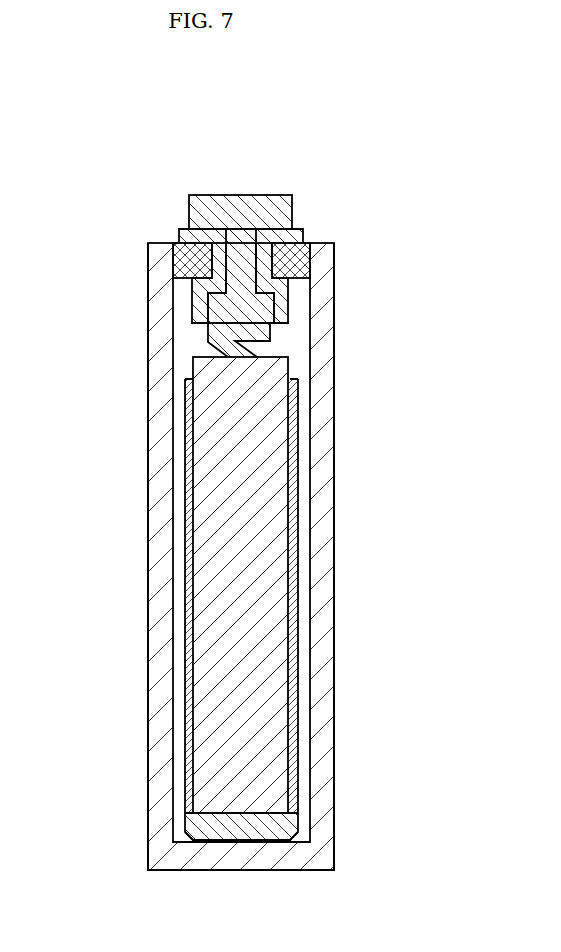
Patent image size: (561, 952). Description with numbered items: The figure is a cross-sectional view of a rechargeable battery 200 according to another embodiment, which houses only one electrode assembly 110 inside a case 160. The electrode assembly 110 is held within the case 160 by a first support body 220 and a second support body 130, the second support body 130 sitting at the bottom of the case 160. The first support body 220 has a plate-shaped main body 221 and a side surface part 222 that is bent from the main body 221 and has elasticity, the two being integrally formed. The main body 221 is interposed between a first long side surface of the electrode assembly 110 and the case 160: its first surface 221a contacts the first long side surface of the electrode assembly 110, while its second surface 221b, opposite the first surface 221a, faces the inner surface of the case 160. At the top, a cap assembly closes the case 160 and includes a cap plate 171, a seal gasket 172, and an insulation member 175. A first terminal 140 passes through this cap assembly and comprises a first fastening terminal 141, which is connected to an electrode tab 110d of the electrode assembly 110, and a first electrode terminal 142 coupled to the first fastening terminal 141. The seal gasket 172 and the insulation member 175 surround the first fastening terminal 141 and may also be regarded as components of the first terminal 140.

The rechargeable battery 200 is at (398, 140).
The electrode assembly 110 is at (275, 497).
The electrode tab 110d is at (210, 340).
The second support body 130 is at (190, 822).
The first terminal 140 is at (236, 206).
The first fastening terminal 141 is at (247, 230).
The first electrode terminal 142 is at (196, 195).
The case 160 is at (150, 285).
The cap plate 171 is at (173, 243).
The seal gasket 172 is at (290, 295).
The insulation member 175 is at (302, 238).
The first support body 220 is at (278, 417).
The main body 221 is at (242, 655).
The first surface 221a is at (266, 817).
The second surface 221b is at (298, 632).
The side surface part 222 is at (187, 670).